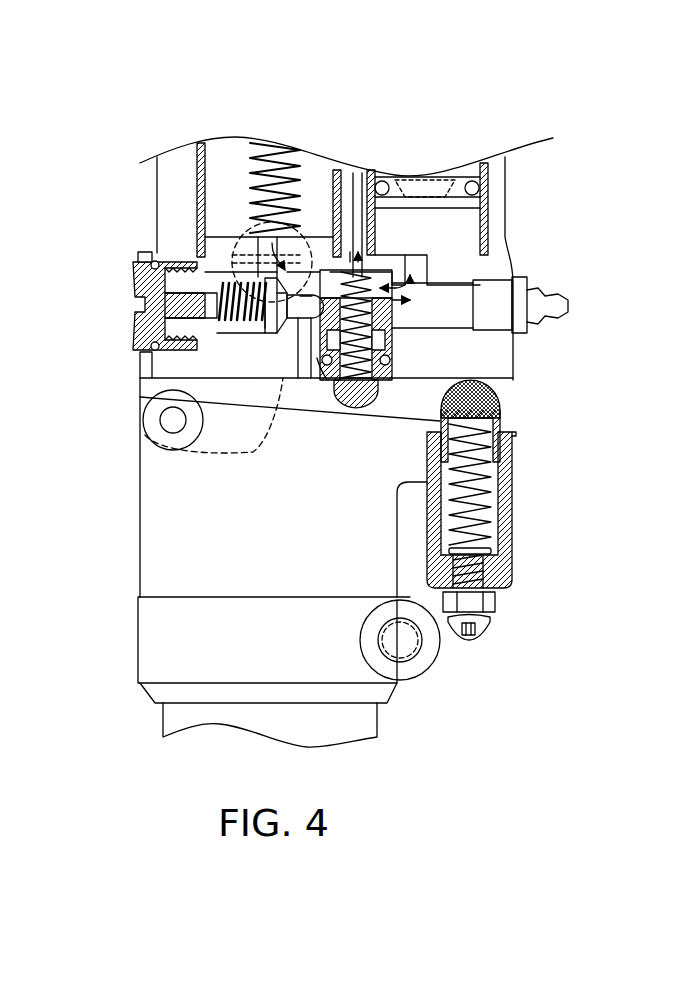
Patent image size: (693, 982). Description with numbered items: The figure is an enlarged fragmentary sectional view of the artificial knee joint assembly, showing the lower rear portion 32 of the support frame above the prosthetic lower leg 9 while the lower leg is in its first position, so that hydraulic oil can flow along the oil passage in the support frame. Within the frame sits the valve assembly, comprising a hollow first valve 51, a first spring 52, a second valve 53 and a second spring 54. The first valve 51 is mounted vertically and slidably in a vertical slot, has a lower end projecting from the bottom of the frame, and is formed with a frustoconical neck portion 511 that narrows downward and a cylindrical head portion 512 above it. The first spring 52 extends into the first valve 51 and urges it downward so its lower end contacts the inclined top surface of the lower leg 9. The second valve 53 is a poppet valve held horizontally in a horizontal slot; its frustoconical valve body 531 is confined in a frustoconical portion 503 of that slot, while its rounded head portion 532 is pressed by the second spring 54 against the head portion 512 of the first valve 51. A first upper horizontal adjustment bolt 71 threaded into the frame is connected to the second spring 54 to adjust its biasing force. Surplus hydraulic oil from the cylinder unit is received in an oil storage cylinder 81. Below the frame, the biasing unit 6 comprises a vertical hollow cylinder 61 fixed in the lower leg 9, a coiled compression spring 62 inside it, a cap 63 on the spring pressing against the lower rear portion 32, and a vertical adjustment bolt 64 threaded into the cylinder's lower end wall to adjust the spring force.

The biasing unit 6 is at (517, 545).
The prosthetic lower leg 9 is at (170, 535).
The lower rear portion 32 is at (488, 358).
The hollow first valve 51 is at (350, 412).
The first spring 52 is at (358, 266).
The second valve 53 is at (267, 327).
The second spring 54 is at (238, 306).
The vertical hollow cylinder 61 is at (510, 498).
The coiled compression spring 62 is at (490, 438).
The cap 63 is at (478, 391).
The vertical adjustment bolt 64 is at (490, 626).
The first upper horizontal adjustment bolt 71 is at (160, 277).
The oil storage cylinder 81 is at (488, 205).
The frustoconical portion 503 is at (305, 305).
The frustoconical neck portion 511 is at (316, 317).
The cylindrical head portion 512 is at (392, 305).
The frustoconical valve body 531 is at (265, 327).
The rounded head portion 532 is at (306, 306).